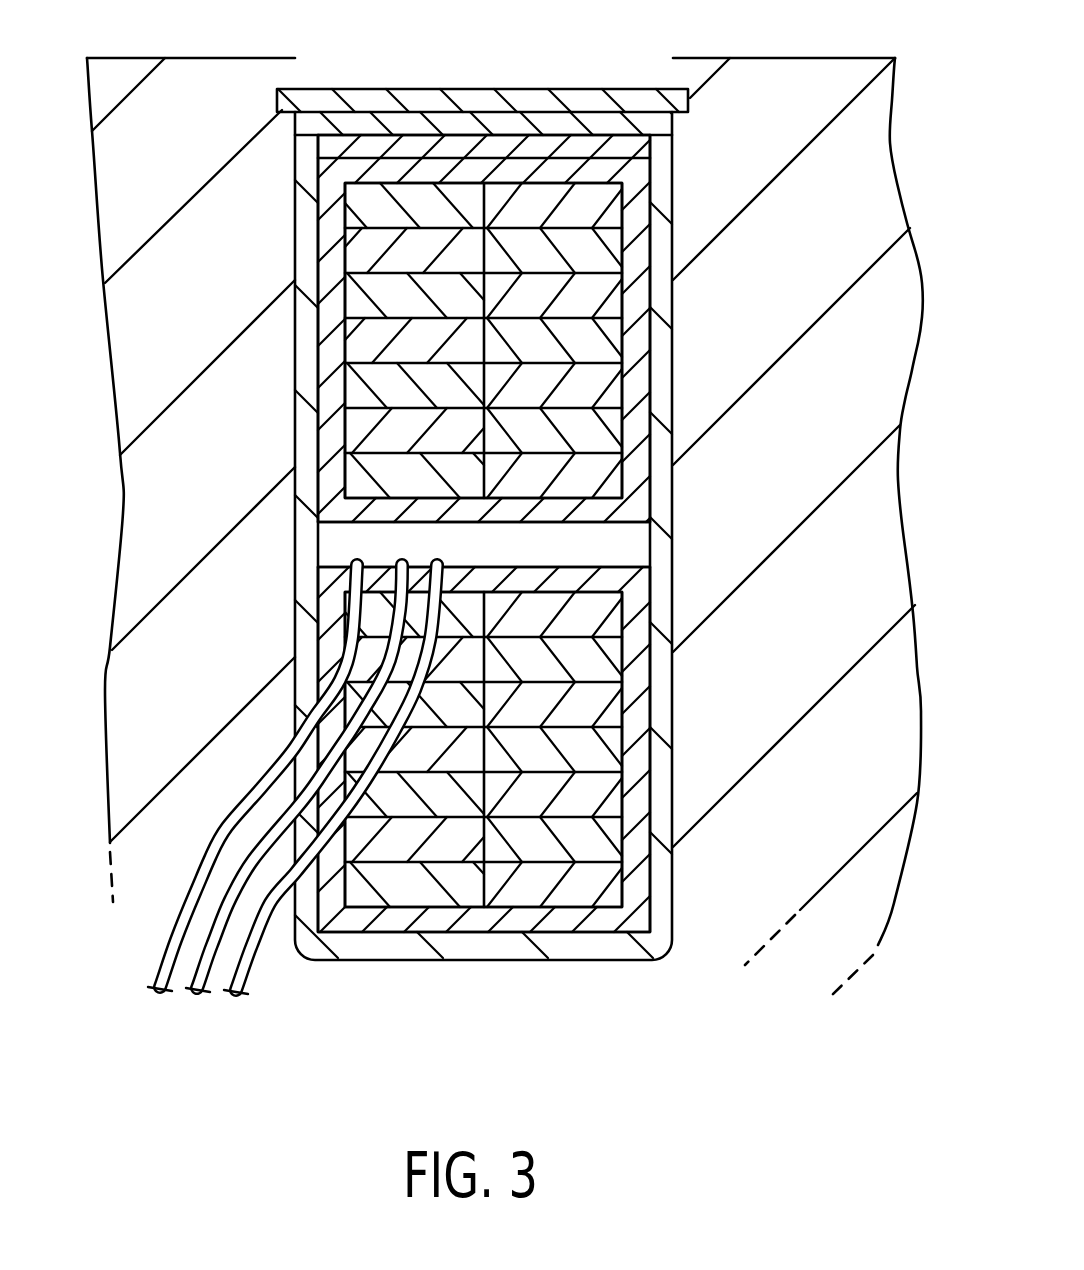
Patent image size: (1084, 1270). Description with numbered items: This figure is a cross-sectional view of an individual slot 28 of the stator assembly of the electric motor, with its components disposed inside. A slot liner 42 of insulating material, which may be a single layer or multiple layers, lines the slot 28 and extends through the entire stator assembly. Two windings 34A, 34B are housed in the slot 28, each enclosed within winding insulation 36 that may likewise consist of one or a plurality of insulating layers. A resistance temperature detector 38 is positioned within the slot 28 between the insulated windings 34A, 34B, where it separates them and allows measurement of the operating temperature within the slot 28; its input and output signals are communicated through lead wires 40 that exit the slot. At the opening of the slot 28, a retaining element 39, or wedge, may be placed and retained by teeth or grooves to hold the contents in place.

The slot 28 is at (372, 88).
The retaining element 39 is at (583, 98).
The slot liner 42 is at (298, 247).
The winding insulation 36 is at (655, 297).
The winding 34A is at (473, 873).
The winding 34B is at (365, 342).
The resistance temperature detector 38 is at (330, 541).
The lead wires 40 is at (253, 940).